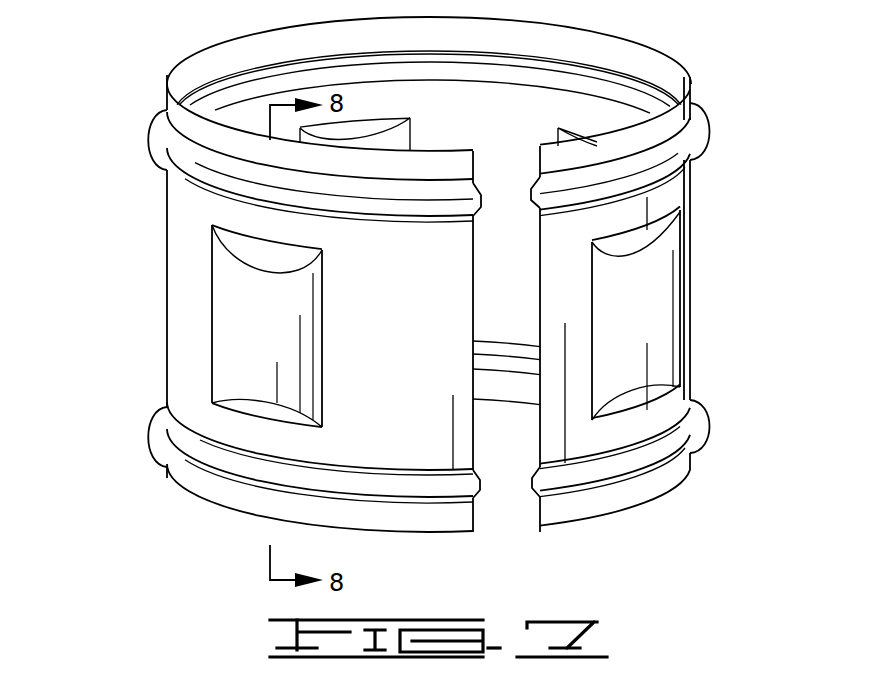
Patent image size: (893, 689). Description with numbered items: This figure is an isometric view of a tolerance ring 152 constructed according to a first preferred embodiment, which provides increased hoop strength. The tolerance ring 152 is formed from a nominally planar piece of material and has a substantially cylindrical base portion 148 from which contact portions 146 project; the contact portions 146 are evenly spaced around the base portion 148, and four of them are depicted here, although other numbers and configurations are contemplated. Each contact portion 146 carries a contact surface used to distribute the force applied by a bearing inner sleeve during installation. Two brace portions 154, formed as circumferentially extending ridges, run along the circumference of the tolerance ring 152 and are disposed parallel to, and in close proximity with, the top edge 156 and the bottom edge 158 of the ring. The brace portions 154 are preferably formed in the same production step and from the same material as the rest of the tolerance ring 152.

The tolerance ring 152 is at (427, 279).
The brace portion 154 is at (688, 147).
The top edge 156 is at (172, 72).
The bottom edge 158 is at (227, 507).
The base portion 148 is at (670, 193).
The contact portion 146 is at (645, 313).